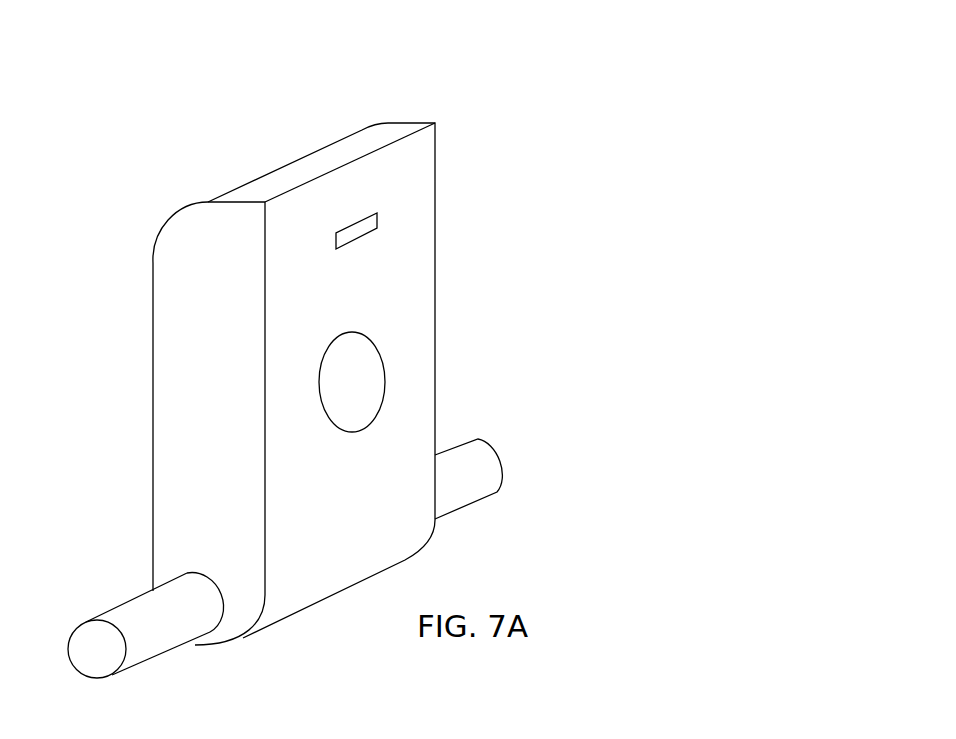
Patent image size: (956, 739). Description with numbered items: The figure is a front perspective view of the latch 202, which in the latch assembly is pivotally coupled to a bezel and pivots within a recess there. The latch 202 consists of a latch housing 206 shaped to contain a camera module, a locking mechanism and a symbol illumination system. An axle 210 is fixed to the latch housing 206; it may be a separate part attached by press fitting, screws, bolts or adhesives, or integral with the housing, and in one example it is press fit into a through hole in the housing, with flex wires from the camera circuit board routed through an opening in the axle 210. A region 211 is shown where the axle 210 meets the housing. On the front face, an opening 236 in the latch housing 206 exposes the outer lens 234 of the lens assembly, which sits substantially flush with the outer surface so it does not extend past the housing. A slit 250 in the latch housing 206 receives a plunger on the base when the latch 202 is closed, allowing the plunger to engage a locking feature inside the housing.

The latch 202 is at (496, 135).
The latch housing 206 is at (195, 439).
The axle 210 is at (458, 440).
The prong base 211 is at (226, 612).
The outer lens 234 is at (362, 373).
The opening 236 is at (352, 332).
The slit 250 is at (379, 226).